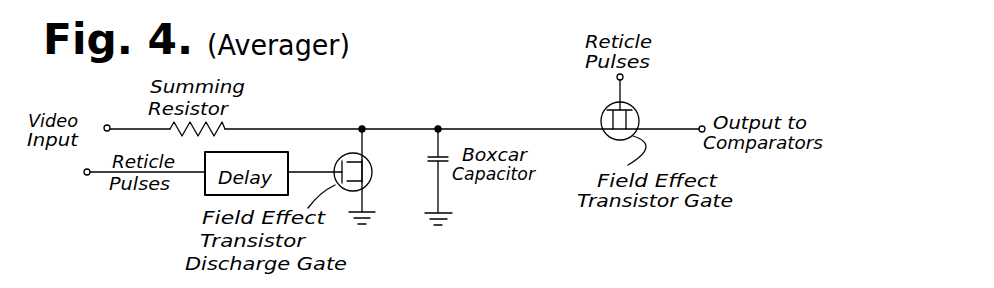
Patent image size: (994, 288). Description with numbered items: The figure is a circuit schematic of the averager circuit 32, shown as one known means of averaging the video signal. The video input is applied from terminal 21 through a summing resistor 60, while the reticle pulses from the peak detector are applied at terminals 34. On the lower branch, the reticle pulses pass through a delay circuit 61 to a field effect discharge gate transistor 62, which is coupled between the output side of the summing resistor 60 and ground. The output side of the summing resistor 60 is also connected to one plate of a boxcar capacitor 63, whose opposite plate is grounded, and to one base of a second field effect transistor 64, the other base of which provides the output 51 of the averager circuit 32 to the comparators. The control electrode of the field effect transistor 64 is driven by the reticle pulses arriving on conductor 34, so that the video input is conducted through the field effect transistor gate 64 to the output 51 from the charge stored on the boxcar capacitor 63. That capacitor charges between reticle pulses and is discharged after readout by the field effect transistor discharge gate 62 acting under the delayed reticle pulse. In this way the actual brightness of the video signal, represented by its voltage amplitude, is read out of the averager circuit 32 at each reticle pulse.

The averager circuit 32 is at (700, 98).
The terminal 21 is at (107, 124).
The summing resistor 60 is at (218, 139).
The terminals 34 is at (84, 175).
The delay circuit 61 is at (205, 188).
The field effect discharge gate transistor 62 is at (372, 161).
The boxcar capacitor 63 is at (427, 158).
The field effect transistor gate 64 is at (634, 109).
The output 51 is at (686, 134).